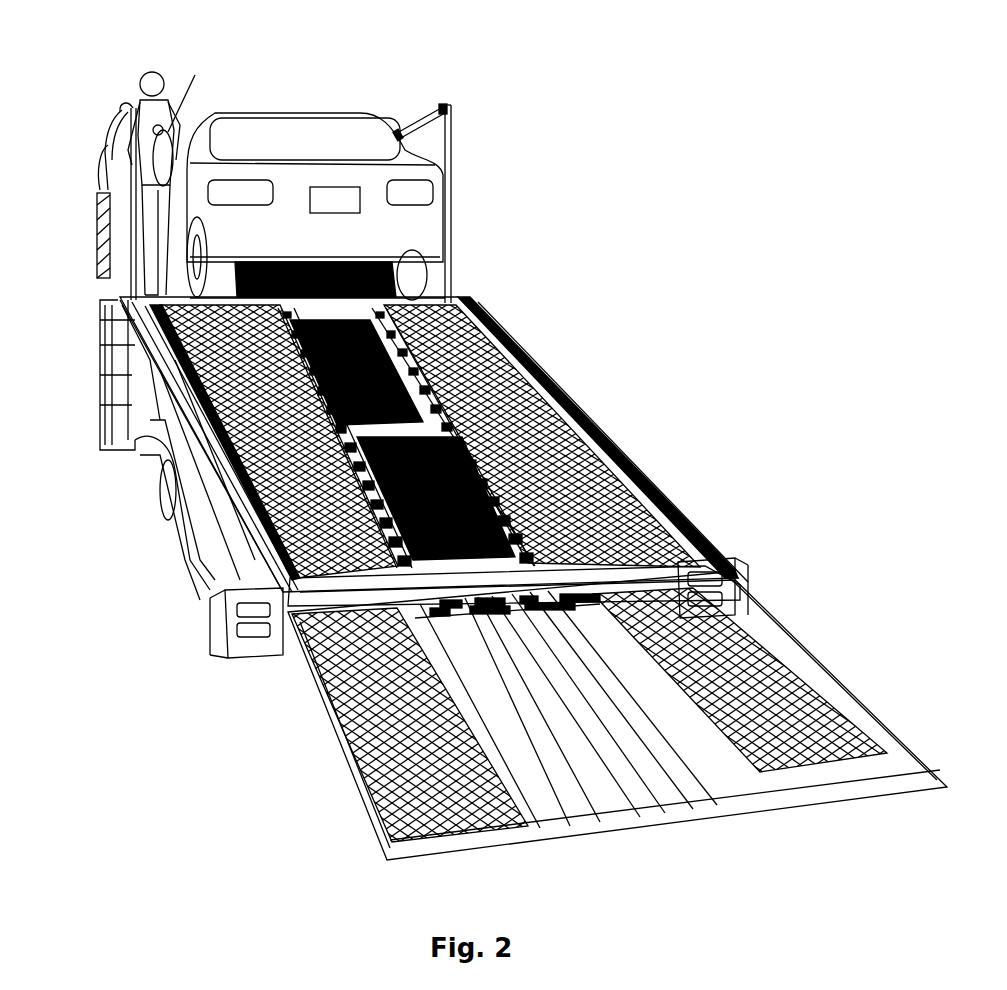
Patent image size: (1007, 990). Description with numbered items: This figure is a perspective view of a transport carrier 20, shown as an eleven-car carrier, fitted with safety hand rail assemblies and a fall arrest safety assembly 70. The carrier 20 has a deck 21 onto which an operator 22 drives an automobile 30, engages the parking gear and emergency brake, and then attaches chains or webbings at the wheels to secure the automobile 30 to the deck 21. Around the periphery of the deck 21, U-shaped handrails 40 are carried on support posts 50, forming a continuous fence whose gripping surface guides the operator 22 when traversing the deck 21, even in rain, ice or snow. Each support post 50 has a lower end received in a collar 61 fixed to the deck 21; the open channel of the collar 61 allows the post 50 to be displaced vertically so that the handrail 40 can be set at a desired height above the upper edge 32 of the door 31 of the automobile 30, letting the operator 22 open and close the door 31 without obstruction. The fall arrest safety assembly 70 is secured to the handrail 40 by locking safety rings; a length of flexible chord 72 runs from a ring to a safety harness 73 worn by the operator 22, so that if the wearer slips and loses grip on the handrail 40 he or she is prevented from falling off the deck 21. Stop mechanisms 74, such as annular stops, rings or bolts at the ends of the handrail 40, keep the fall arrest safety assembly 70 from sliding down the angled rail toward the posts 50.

The transport carrier 20 is at (212, 583).
The deck 21 is at (500, 355).
The operator 22 is at (172, 108).
The automobile 30 is at (268, 231).
The door 31 is at (96, 235).
The upper edge of the door 32 is at (130, 148).
The handrail 40 is at (400, 132).
The support post 50 is at (450, 172).
The collar 61 is at (122, 445).
The fall arrest safety assembly 70 is at (137, 68).
The flexible chord 72 is at (118, 150).
The safety harness 73 is at (163, 128).
The stop mechanism 74 is at (417, 118).